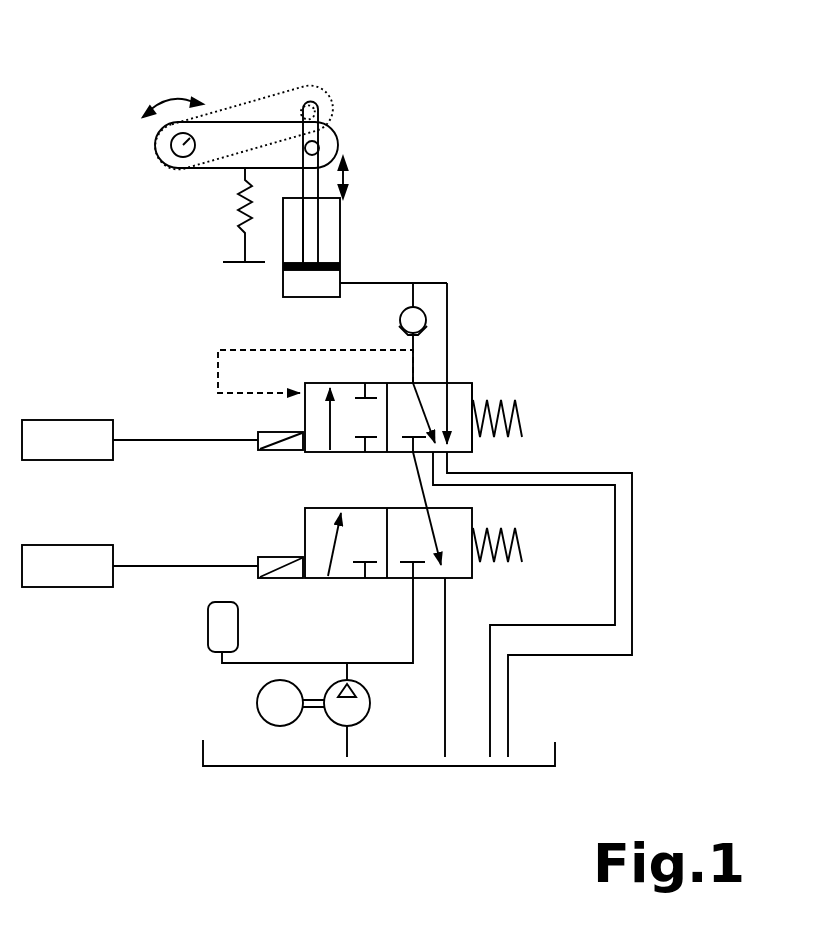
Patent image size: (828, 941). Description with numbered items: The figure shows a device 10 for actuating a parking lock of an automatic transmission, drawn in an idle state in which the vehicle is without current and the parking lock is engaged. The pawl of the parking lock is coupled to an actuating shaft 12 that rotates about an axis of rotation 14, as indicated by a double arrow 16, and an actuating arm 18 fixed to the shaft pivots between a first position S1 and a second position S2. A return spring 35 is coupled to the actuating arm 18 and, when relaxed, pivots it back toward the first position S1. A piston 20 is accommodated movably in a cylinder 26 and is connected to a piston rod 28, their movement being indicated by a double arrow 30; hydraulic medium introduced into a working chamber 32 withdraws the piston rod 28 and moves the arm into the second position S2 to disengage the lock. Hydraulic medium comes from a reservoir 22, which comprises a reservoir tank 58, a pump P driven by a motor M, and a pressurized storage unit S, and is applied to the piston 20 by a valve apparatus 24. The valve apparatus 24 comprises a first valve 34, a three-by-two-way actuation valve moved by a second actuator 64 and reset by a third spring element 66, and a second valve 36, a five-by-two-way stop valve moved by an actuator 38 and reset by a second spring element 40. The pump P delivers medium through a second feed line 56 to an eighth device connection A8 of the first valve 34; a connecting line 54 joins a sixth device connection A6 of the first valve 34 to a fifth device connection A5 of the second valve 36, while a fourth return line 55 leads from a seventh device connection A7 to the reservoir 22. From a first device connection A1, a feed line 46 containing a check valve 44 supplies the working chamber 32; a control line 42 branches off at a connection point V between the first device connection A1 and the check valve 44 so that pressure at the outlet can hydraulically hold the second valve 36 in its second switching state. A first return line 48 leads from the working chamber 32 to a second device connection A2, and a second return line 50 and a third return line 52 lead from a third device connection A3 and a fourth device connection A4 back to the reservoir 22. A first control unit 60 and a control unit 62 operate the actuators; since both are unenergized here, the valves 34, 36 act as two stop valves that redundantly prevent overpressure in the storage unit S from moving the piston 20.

The device 10 is at (435, 111).
The actuating shaft 12 is at (170, 157).
The axis of rotation 14 is at (157, 133).
The double arrow 16 is at (168, 100).
The actuating arm 18 is at (243, 106).
The piston 20 is at (314, 262).
The reservoir 22 is at (574, 765).
The valve apparatus 24 is at (496, 375).
The cylinder 26 is at (341, 226).
The piston rod 28 is at (304, 224).
The double arrow 30 is at (351, 168).
The working chamber 32 is at (322, 280).
The first valve 34 is at (475, 571).
The return spring 35 is at (240, 228).
The second valve 36 is at (474, 392).
The actuator 38 is at (272, 451).
The second spring element 40 is at (523, 418).
The control line 42 is at (218, 384).
The check valve 44 is at (399, 320).
The feed line 46 is at (414, 290).
The first return line 48 is at (448, 292).
The second return line 50 is at (634, 593).
The third return line 52 is at (617, 540).
The connecting line 54 is at (437, 488).
The fourth return line 55 is at (443, 679).
The second feed line 56 is at (412, 624).
The reservoir tank 58 is at (557, 745).
The first control unit 60 is at (48, 462).
The control unit 62 is at (48, 588).
The second actuator 64 is at (266, 579).
The third spring element 66 is at (523, 543).
The first device connection A1 is at (422, 372).
The second device connection A2 is at (455, 376).
The third device connection A3 is at (458, 455).
The fourth device connection A4 is at (431, 458).
The fifth device connection A5 is at (399, 456).
The sixth device connection A6 is at (425, 512).
The seventh device connection A7 is at (455, 580).
The eighth device connection A8 is at (397, 582).
The storage unit S is at (207, 627).
The first position S1 is at (200, 172).
The second position S2 is at (329, 90).
The pump P is at (371, 704).
The motor M is at (290, 703).
The connection point V is at (404, 357).